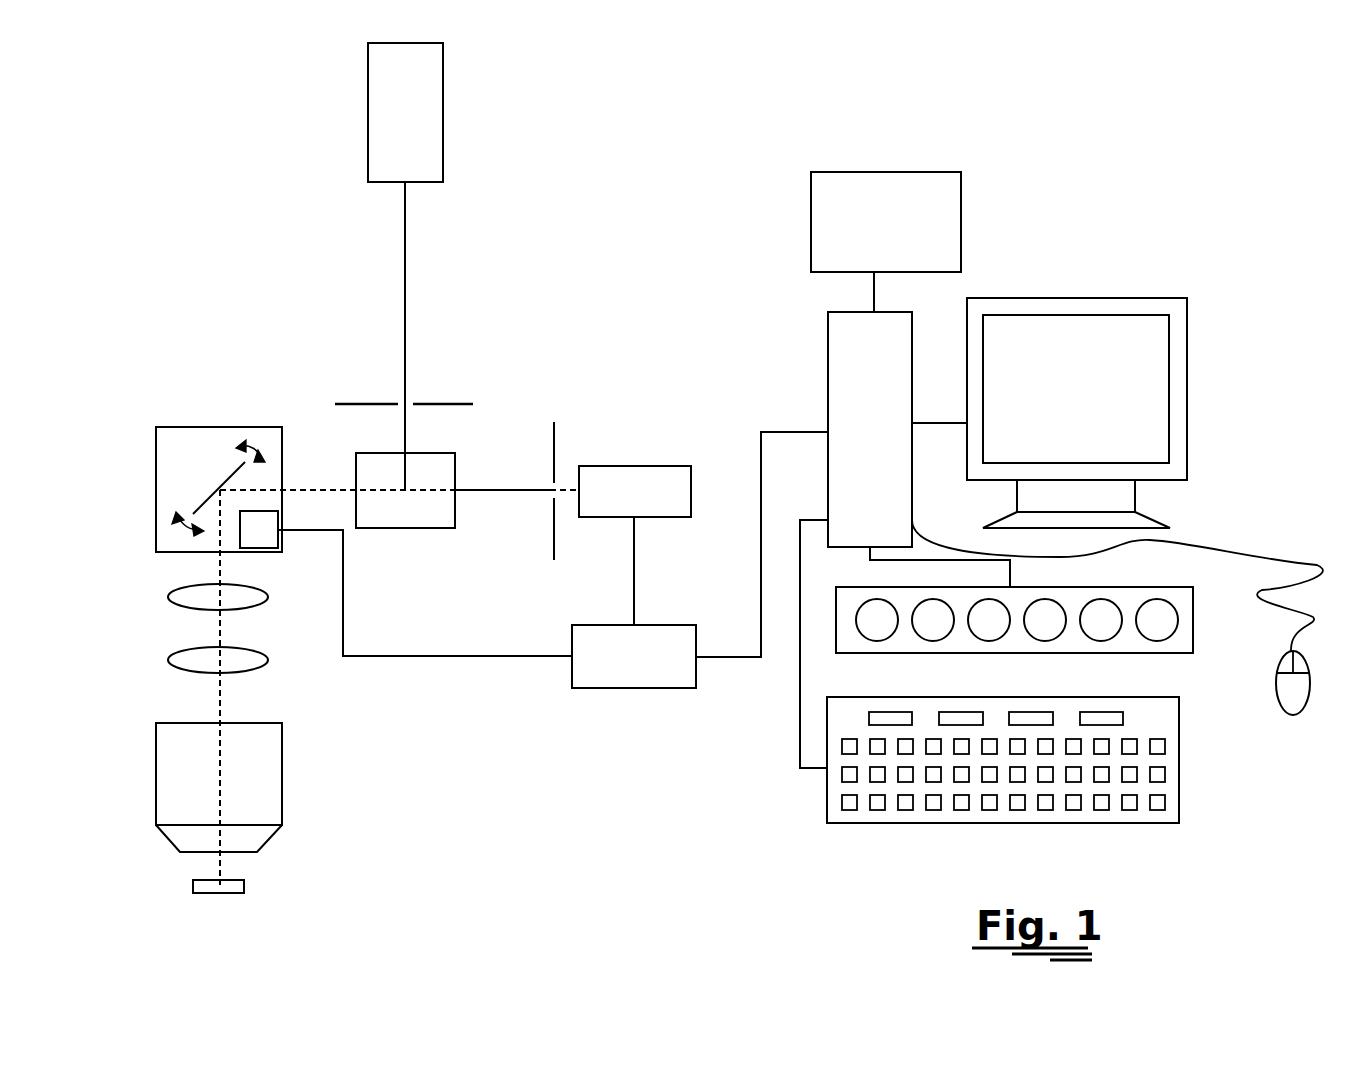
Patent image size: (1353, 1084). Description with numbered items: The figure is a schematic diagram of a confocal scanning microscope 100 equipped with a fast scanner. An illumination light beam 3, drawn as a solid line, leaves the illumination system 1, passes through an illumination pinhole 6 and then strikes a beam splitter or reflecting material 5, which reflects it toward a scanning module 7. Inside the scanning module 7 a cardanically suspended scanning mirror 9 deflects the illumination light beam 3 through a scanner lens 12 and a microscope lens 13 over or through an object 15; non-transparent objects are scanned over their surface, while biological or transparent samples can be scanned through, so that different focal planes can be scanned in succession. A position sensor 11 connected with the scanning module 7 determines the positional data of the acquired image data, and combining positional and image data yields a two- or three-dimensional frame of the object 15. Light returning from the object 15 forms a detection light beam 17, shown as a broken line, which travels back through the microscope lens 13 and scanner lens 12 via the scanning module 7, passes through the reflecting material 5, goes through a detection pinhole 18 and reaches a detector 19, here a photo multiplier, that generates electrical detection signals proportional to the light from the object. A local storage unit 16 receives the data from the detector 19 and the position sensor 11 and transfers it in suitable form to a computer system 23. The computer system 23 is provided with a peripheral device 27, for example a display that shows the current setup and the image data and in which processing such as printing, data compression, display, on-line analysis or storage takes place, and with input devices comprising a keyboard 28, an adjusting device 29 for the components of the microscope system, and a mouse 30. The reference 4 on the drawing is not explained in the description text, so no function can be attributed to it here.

The illumination system 1 is at (430, 87).
The illumination light beam 3 is at (405, 222).
The beam path 4 is at (405, 368).
The reflecting material 5 is at (432, 520).
The illumination pinhole 6 is at (357, 404).
The scanning module 7 is at (180, 448).
The scanning mirror 9 is at (205, 497).
The position sensor 11 is at (266, 535).
The scanner lens 12 is at (188, 660).
The microscope lens 13 is at (182, 750).
The object 15 is at (212, 886).
The local storage unit 16 is at (637, 675).
The detection light beam 17 is at (470, 490).
The detection pinhole 18 is at (556, 447).
The detector 19 is at (600, 480).
The computer system 23 is at (837, 361).
The peripheral device 27 is at (825, 234).
The keyboard 28 is at (1153, 720).
The adjusting device 29 is at (1080, 595).
The mouse 30 is at (1288, 689).
The confocal scanning microscope 100 is at (487, 355).